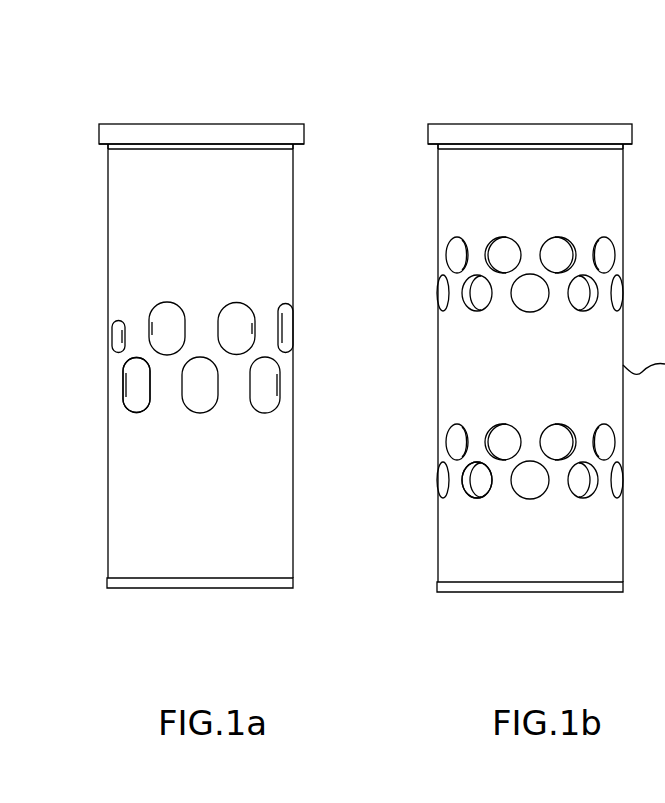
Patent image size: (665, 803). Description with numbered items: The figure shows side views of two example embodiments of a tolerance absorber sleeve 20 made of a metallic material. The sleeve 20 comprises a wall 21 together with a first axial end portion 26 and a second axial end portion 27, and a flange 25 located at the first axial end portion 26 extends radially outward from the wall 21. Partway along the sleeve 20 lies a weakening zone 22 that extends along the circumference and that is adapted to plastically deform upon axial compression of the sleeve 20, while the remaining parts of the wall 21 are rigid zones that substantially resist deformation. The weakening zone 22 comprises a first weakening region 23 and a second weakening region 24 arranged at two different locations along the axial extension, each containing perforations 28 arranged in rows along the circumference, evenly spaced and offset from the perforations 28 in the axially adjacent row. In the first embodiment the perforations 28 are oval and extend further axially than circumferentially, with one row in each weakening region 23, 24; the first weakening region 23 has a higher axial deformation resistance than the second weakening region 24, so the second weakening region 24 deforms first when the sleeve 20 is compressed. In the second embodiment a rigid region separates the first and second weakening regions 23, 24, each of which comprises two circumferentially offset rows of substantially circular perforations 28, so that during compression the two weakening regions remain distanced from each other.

In FIG. 1A, the tolerance absorber sleeve 20 is at (120, 106).
In FIG. 1B, the tolerance absorber sleeve 20 is at (452, 105).
In FIG. 1A, the wall 21 is at (108, 206).
In FIG. 1B, the wall 21 is at (438, 206).
In FIG. 1A, the weakening zone 22 is at (103, 298).
In FIG. 1B, the weakening zone 22 is at (437, 232).
In FIG. 1A, the first weakening region 23 is at (295, 333).
In FIG. 1B, the first weakening region 23 is at (633, 270).
In FIG. 1A, the second weakening region 24 is at (293, 383).
In FIG. 1B, the second weakening region 24 is at (625, 465).
In FIG. 1A, the flange 25 is at (190, 124).
In FIG. 1B, the flange 25 is at (523, 124).
In FIG. 1A, the first axial end portion 26 is at (255, 124).
In FIG. 1B, the first axial end portion 26 is at (585, 124).
In FIG. 1A, the second axial end portion 27 is at (240, 592).
In FIG. 1B, the second axial end portion 27 is at (573, 592).
In FIG. 1A, the perforations 28 is at (135, 412).
In FIG. 1B, the perforations 28 is at (470, 498).